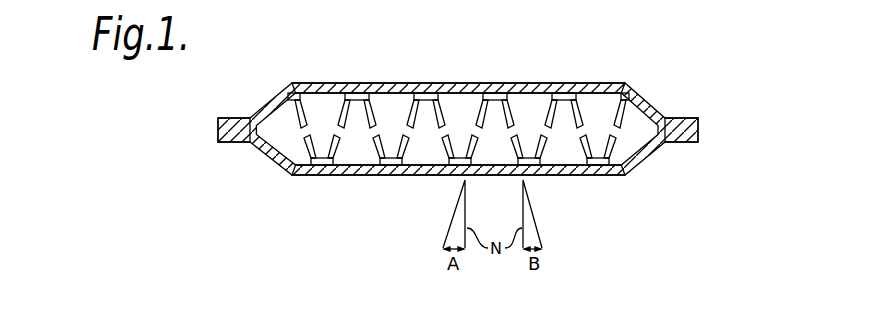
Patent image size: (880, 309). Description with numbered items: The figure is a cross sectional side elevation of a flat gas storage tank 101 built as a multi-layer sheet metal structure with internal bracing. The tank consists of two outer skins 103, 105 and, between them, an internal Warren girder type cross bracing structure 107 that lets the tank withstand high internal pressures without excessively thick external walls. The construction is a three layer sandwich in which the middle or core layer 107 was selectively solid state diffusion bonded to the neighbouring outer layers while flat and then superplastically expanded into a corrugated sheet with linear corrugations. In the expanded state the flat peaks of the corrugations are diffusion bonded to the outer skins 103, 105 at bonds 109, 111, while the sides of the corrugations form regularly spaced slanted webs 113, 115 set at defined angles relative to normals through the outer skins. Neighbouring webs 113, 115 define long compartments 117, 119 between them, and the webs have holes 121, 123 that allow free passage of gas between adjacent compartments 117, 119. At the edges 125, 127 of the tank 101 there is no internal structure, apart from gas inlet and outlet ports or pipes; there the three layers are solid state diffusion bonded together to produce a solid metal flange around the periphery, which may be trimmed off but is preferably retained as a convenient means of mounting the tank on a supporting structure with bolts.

The gas storage tank 101 is at (270, 92).
The outer skin 103 is at (481, 86).
The outer skin 105 is at (612, 177).
The cross bracing structure 107 is at (377, 108).
The diffusion bond 109 is at (357, 93).
The diffusion bond 111 is at (388, 166).
The slanted web 113 is at (586, 113).
The slanted web 115 is at (553, 166).
The compartment 117 is at (600, 115).
The compartment 119 is at (563, 117).
The hole 121 is at (460, 166).
The hole 123 is at (459, 100).
The edge 125 is at (227, 143).
The edge 127 is at (682, 144).